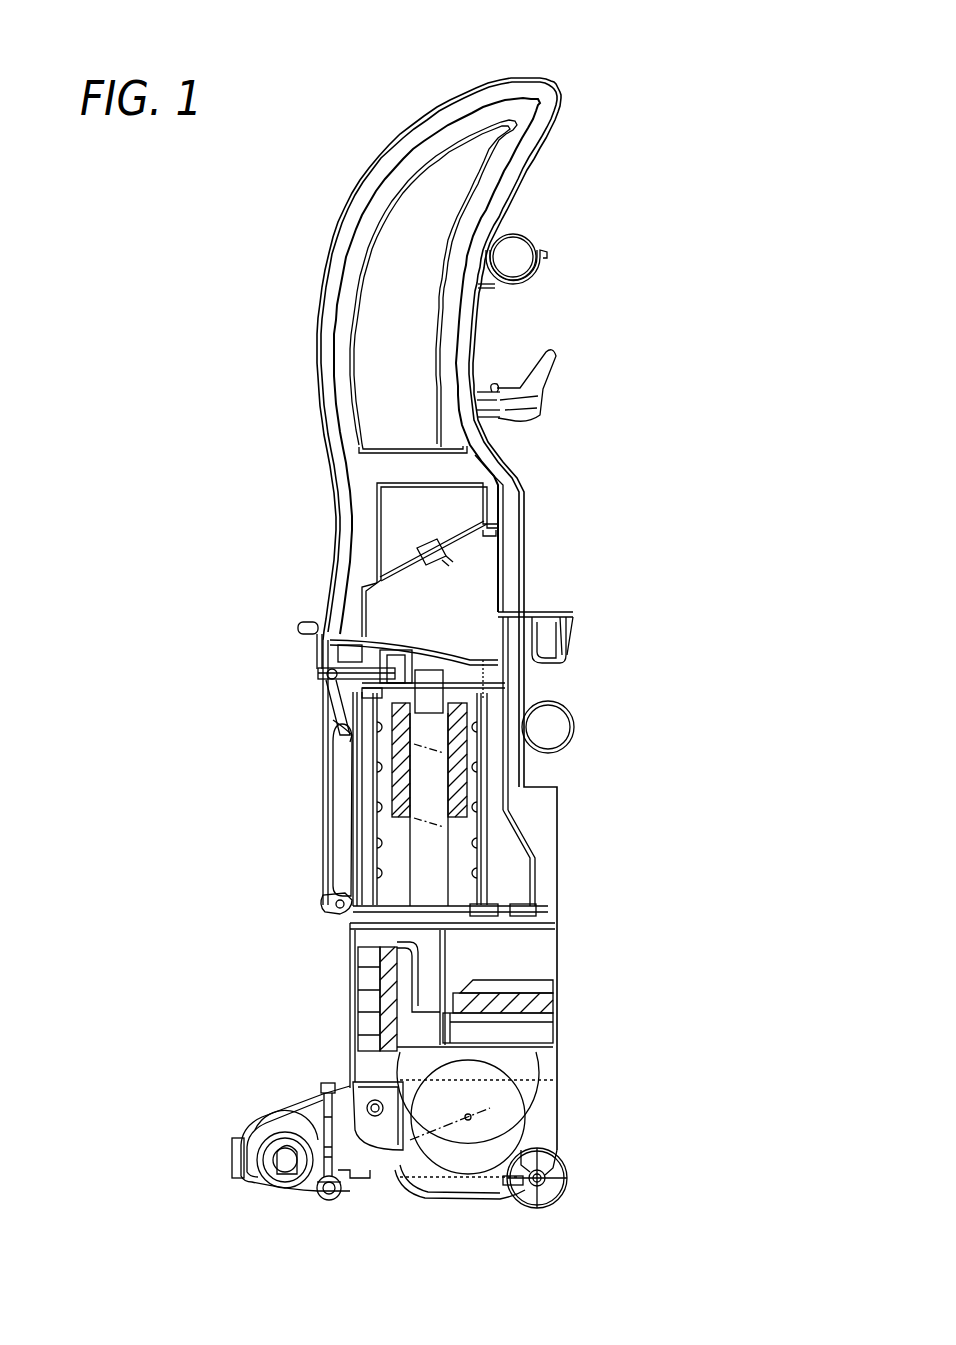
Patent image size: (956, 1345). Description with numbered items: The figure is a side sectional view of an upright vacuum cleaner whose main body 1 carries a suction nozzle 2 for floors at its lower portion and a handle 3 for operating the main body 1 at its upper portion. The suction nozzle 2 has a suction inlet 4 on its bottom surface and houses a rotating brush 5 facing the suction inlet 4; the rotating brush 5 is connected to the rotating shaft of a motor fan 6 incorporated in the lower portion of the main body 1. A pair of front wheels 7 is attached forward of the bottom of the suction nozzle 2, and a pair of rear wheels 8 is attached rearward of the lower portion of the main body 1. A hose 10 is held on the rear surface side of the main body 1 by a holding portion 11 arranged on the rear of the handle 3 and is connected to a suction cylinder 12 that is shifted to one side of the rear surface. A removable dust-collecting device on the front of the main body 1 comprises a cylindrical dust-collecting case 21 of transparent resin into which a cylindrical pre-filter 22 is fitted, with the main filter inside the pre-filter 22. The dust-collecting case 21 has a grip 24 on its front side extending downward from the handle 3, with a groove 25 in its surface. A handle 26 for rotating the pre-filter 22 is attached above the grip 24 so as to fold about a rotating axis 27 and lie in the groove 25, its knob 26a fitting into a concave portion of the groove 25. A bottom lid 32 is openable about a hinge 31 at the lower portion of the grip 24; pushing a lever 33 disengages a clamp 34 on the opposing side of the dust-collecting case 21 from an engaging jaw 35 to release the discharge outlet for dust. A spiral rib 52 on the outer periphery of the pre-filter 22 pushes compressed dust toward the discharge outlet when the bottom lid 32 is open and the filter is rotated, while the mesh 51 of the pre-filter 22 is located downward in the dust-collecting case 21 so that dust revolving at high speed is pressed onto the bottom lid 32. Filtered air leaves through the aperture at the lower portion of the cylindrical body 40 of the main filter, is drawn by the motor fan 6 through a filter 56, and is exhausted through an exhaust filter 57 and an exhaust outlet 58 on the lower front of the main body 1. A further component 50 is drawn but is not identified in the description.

The main body 1 is at (606, 800).
The suction nozzle 2 is at (280, 1103).
The handle 3 is at (532, 175).
The suction inlet 4 is at (252, 1213).
The rotating brush 5 is at (238, 1140).
The motor fan 6 is at (497, 1120).
The front wheels 7 is at (327, 1200).
The rear wheels 8 is at (573, 1183).
The hose 10 is at (534, 246).
The holding portion 11 is at (524, 287).
The suction cylinder 12 is at (560, 715).
The dust-collecting case 21 is at (383, 851).
The pre-filter 22 is at (378, 790).
The grip 24 is at (327, 777).
The groove 25 is at (333, 748).
The handle 26 is at (332, 702).
The knob 26a is at (332, 727).
The rotating axis 27 is at (323, 667).
The hinge 31 is at (318, 902).
The bottom lid 32 is at (498, 907).
The lever 33 is at (328, 918).
The clamp 34 is at (538, 900).
The engaging jaw 35 is at (543, 915).
The cylindrical body 40 is at (450, 868).
The cylinder wall 50 is at (487, 750).
The mesh 51 is at (387, 858).
The spiral rib 52 is at (480, 840).
The filter 56 is at (550, 1000).
The exhaust filter 57 is at (337, 1040).
The exhaust outlet 58 is at (365, 980).